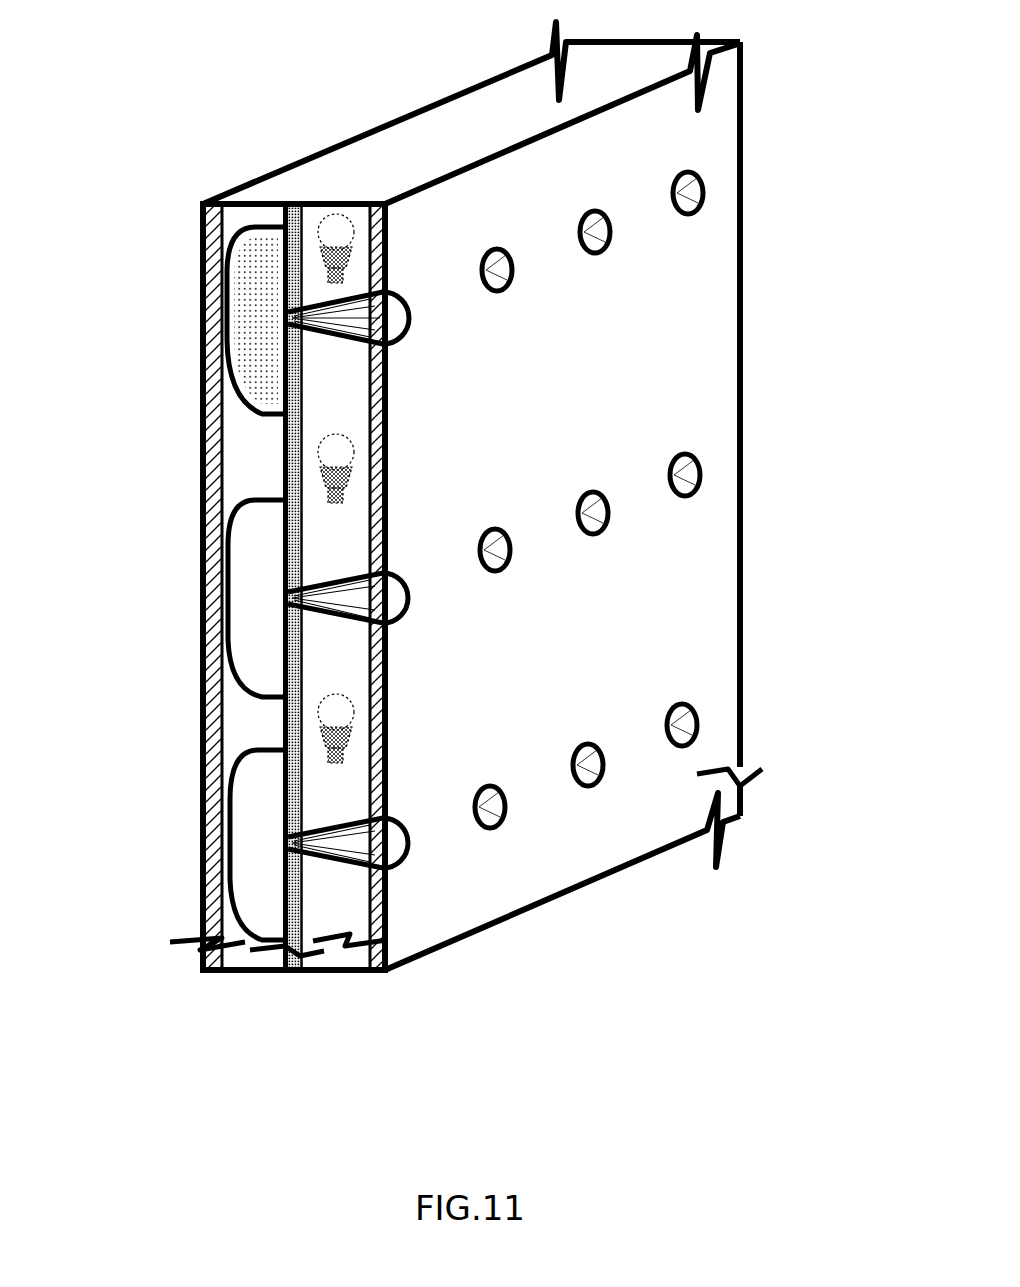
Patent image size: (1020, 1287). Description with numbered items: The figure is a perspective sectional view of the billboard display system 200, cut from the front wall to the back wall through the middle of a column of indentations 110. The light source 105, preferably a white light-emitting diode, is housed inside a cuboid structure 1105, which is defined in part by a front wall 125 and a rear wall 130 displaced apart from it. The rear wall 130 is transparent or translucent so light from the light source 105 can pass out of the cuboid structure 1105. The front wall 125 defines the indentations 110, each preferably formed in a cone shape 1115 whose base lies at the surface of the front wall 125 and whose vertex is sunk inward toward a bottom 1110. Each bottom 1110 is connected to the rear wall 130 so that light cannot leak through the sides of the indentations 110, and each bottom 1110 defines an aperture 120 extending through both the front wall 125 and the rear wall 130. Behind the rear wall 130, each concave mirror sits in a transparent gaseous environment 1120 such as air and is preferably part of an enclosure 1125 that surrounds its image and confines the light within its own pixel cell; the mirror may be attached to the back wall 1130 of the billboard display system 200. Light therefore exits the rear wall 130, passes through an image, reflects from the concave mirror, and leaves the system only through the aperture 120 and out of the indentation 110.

The billboard display system 200 is at (178, 126).
The cuboid structure 1105 is at (357, 190).
The cone shape 1115 is at (410, 289).
The transparent gaseous environment 1120 is at (263, 246).
The bottom 1110 is at (280, 310).
The indentations 110 is at (617, 232).
The aperture 120 is at (306, 315).
The front wall 125 is at (387, 462).
The rear wall 130 is at (387, 513).
The light source 105 is at (325, 443).
The back wall 1130 is at (230, 532).
The enclosure 1125 is at (275, 698).